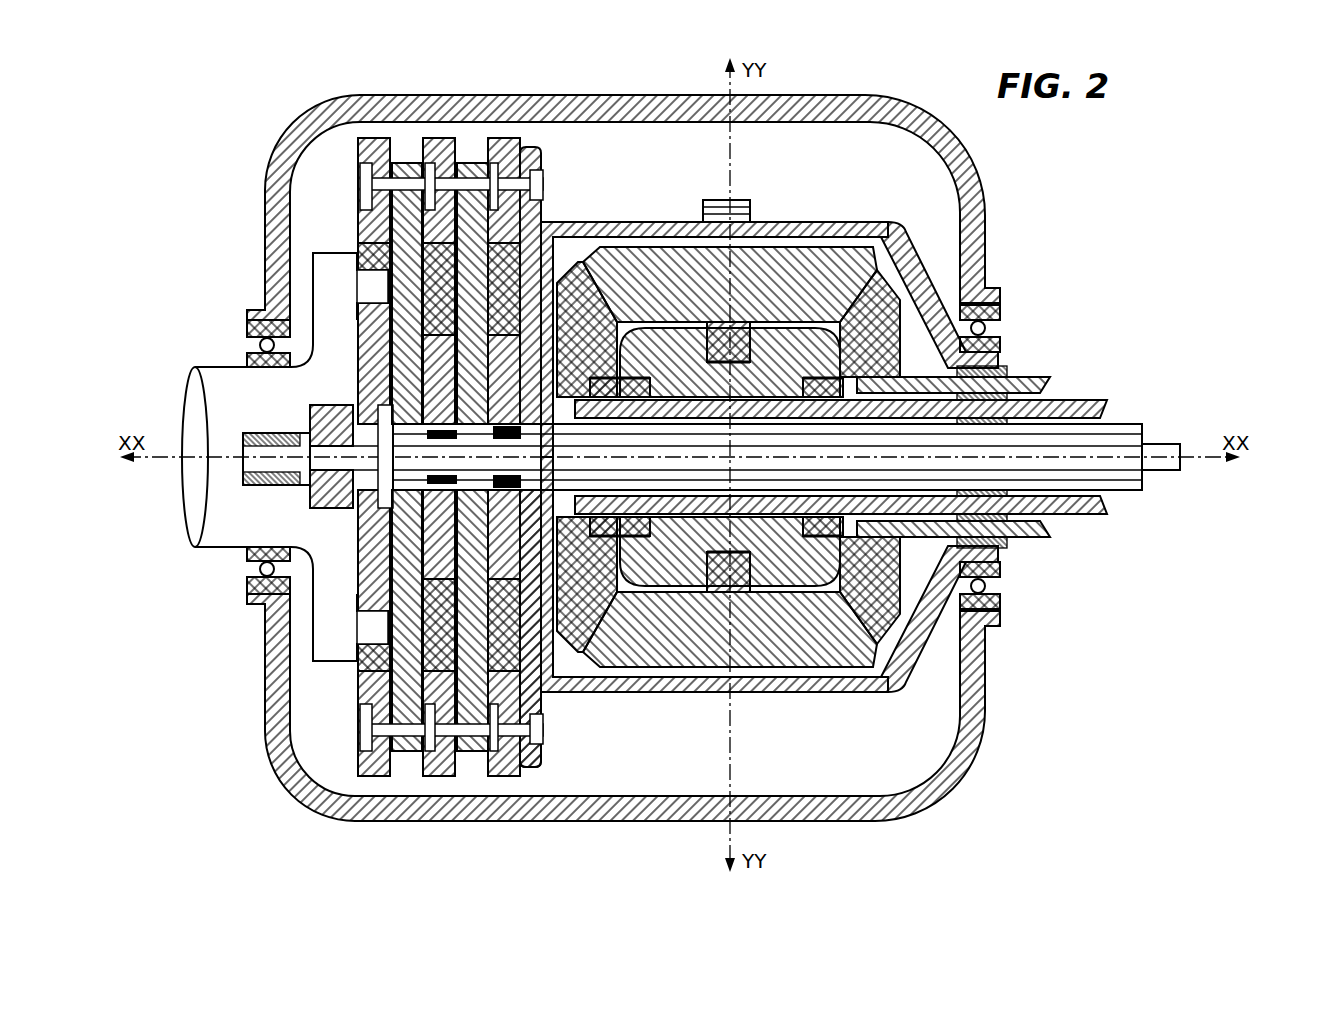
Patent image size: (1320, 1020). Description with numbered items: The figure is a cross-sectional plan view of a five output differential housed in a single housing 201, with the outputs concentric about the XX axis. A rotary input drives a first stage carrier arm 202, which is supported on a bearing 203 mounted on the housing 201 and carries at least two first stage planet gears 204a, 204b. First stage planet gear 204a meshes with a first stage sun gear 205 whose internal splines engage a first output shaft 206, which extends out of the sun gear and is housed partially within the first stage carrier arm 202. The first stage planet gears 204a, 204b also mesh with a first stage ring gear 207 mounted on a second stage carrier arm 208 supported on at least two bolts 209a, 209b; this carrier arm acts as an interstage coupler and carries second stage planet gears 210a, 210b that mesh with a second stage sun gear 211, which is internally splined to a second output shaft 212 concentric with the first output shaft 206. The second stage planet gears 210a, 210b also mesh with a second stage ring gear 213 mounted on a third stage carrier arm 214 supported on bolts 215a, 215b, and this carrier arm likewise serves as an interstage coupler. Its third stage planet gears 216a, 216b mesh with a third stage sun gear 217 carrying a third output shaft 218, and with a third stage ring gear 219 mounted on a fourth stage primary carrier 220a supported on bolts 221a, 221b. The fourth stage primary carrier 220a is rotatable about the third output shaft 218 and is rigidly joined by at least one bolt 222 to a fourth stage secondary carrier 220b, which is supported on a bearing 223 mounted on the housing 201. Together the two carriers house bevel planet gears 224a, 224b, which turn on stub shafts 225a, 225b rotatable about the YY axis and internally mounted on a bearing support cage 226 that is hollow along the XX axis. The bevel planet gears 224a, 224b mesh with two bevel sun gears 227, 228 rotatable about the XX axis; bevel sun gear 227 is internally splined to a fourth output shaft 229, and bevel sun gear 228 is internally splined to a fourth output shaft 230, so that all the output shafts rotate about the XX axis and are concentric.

The housing 201 is at (275, 257).
The first stage carrier arm 202 is at (330, 297).
The bearing 203 is at (262, 347).
The first stage planet gear 204a is at (360, 648).
The first stage planet gear 204b is at (368, 250).
The first stage sun gear 205 is at (380, 562).
The first output shaft 206 is at (1210, 460).
The first stage ring gear 207 is at (358, 680).
The second stage carrier arm 208 is at (392, 762).
The bolt 209a is at (368, 727).
The bolt 209b is at (365, 183).
The second stage planet gear 210a is at (443, 627).
The second stage planet gear 210b is at (403, 178).
The second stage sun gear 211 is at (422, 535).
The second output shaft 212 is at (1140, 480).
The second stage ring gear 213 is at (450, 772).
The third stage carrier arm 214 is at (475, 756).
The bolt 215a is at (432, 752).
The bolt 215b is at (463, 178).
The third stage planet gear 216a is at (508, 565).
The third stage planet gear 216b is at (505, 262).
The third stage sun gear 217 is at (525, 560).
The third output shaft 218 is at (1102, 505).
The third stage ring gear 219 is at (545, 738).
The fourth stage primary carrier 220a is at (675, 222).
The fourth stage secondary carrier 220b is at (815, 222).
The bolt 221a is at (537, 745).
The bolt 221b is at (535, 177).
The bolt 222 is at (757, 210).
The bearing 223 is at (985, 588).
The bevel planet gear 224a is at (805, 655).
The bevel planet gear 224b is at (822, 255).
The stub shaft 225a is at (735, 695).
The stub shaft 225b is at (635, 262).
The bearing support cage 226 is at (813, 600).
The bevel sun gear 227 is at (570, 290).
The bevel sun gear 228 is at (925, 300).
The fourth output shaft 229 is at (1100, 410).
The fourth output shaft 230 is at (1045, 385).